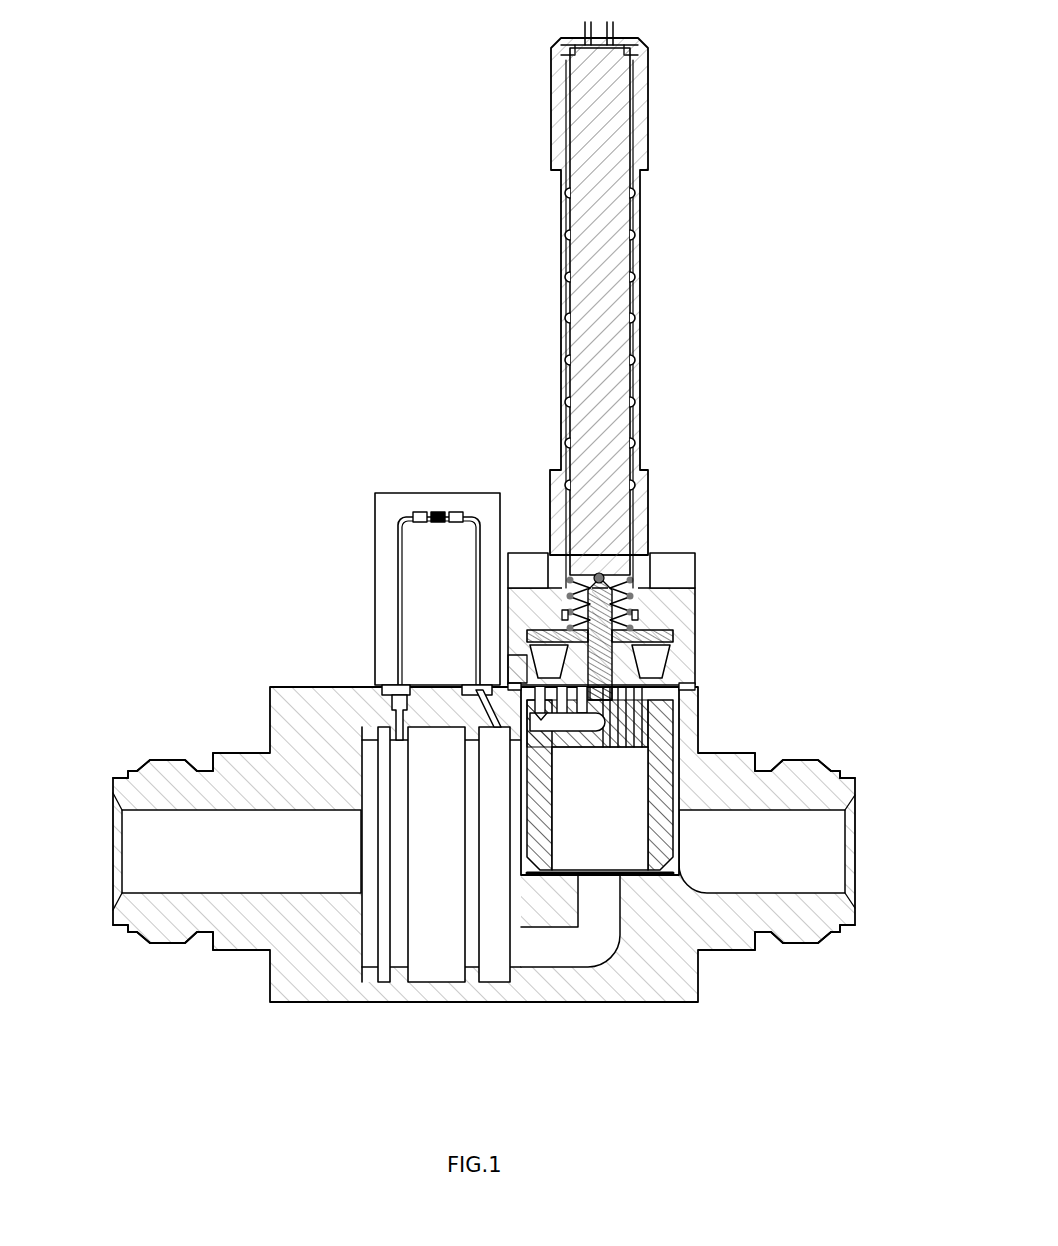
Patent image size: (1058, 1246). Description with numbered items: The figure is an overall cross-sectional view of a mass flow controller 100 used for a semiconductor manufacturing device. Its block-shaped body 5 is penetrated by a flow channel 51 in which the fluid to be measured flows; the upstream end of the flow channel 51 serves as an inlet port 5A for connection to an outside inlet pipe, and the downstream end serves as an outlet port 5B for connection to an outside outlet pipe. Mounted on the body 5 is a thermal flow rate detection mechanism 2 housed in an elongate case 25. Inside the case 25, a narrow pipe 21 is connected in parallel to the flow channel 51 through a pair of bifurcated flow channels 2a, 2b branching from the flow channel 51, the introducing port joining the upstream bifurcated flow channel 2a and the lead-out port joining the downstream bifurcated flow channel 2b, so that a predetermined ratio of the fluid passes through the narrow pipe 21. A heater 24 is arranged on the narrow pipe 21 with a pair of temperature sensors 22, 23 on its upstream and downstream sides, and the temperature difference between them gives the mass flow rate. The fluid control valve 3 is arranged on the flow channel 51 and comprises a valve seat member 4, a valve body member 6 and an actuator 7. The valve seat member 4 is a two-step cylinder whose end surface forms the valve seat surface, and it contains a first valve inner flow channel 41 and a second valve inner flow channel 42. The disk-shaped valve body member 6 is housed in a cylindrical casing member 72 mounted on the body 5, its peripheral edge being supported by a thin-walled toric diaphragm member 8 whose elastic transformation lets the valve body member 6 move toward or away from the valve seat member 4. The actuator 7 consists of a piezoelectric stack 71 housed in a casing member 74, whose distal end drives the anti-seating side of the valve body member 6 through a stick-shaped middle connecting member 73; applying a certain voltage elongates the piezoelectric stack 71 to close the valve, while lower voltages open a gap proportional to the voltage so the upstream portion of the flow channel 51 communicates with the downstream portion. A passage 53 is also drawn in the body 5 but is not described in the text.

The mass flow controller 100 is at (245, 200).
The flow rate detection mechanism 2 is at (393, 606).
The bifurcated flow channel 2a is at (399, 742).
The bifurcated flow channel 2b is at (496, 729).
The narrow pipe 21 is at (398, 582).
The temperature sensor 22 is at (425, 512).
The temperature sensor 23 is at (455, 512).
The heater 24 is at (439, 512).
The case 25 is at (375, 608).
The fluid control valve 3 is at (620, 626).
The valve seat member 4 is at (520, 815).
The first valve inner flow channel 41 is at (610, 839).
The second valve inner flow channel 42 is at (565, 724).
The body 5 is at (479, 890).
The inlet port 5A is at (118, 776).
The outlet port 5B is at (852, 778).
The flow channel 51 is at (452, 870).
The connecting passage 53 is at (692, 875).
The valve body member 6 is at (680, 668).
The actuator 7 is at (664, 305).
The piezoelectric stack 71 is at (628, 400).
The casing member 72 is at (506, 643).
The middle connecting member 73 is at (603, 575).
The casing member 74 is at (640, 282).
The diaphragm member 8 is at (522, 658).